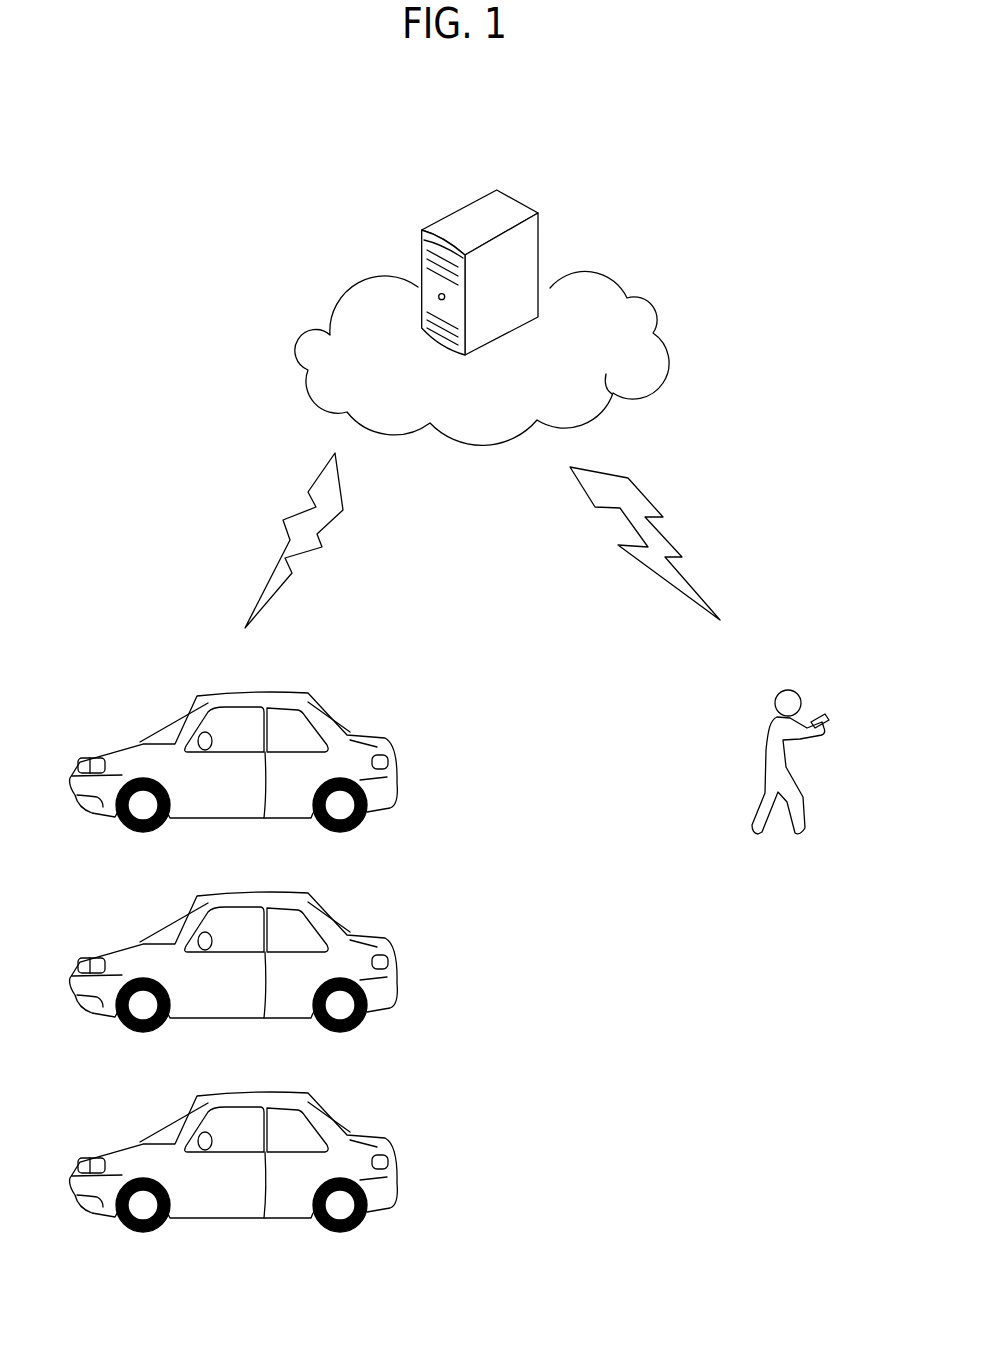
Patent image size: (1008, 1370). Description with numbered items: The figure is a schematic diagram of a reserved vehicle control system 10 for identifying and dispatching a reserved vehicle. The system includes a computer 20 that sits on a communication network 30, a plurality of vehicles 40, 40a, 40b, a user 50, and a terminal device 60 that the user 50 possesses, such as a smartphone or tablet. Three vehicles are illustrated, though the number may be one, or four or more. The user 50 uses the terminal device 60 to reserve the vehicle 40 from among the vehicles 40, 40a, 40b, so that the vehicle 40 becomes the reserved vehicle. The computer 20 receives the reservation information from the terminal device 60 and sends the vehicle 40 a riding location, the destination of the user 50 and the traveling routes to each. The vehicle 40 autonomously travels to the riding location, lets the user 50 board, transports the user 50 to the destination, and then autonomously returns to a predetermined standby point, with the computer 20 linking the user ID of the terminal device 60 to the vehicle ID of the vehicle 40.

The reserved vehicle control system 10 is at (734, 273).
The computer 20 is at (465, 220).
The communication network 30 is at (608, 277).
The vehicle 40 is at (178, 715).
The vehicle 40a is at (178, 915).
The vehicle 40b is at (178, 1115).
The user 50 is at (768, 752).
The terminal device 60 is at (822, 714).